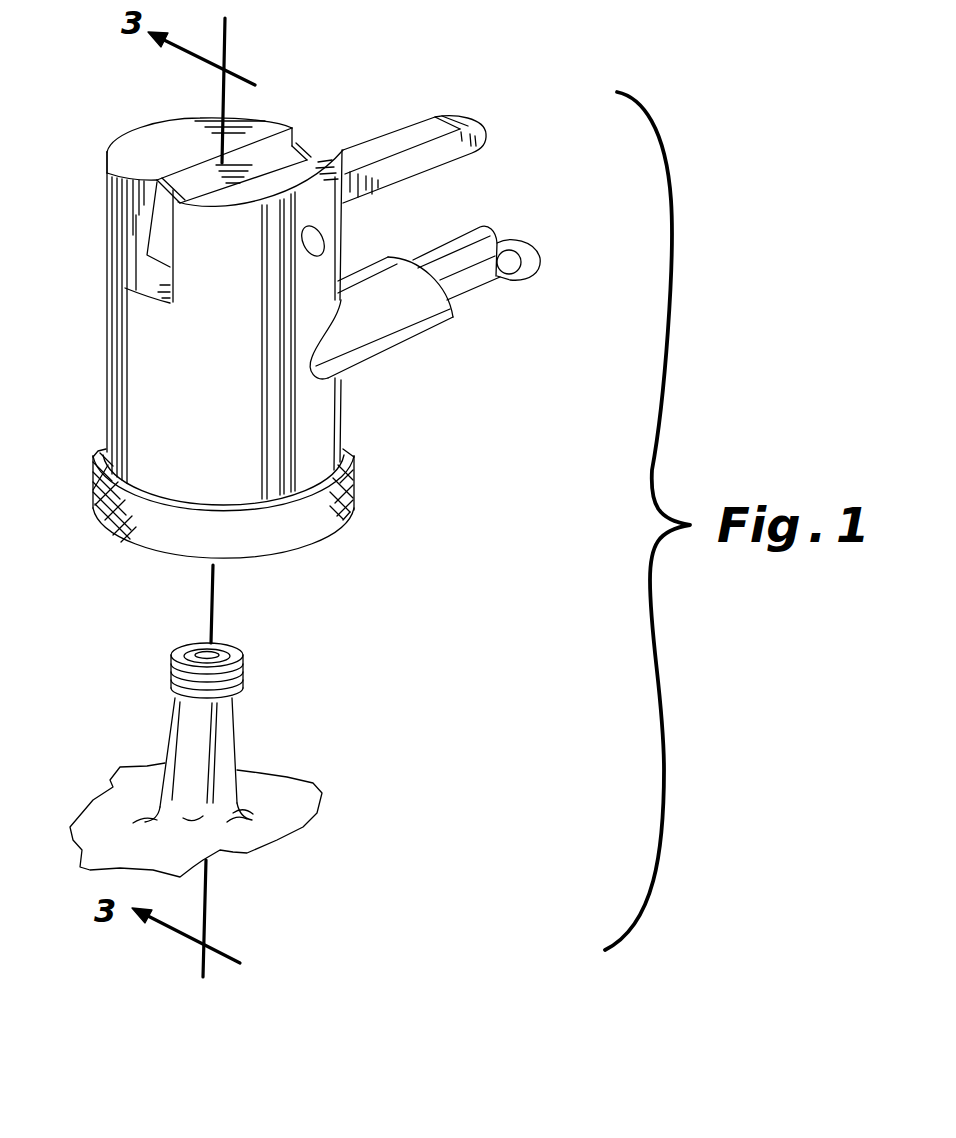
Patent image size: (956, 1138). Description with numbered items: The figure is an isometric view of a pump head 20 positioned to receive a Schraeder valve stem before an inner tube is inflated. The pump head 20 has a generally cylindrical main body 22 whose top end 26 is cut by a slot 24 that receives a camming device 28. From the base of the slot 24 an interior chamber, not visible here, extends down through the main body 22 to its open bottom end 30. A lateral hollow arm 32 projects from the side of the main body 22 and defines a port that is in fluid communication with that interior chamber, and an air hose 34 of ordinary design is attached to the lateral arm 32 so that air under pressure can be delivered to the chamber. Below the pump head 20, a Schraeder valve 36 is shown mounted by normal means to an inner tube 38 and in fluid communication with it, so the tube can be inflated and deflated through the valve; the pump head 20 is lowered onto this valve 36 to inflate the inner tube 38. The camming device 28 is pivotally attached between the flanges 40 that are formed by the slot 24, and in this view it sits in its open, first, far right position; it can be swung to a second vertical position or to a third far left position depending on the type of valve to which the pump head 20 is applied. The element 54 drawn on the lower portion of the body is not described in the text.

The pump head 20 is at (360, 80).
The main body 22 is at (168, 422).
The slot 24 is at (128, 223).
The top end 26 is at (157, 155).
The camming device 28 is at (468, 112).
The open bottom end 30 is at (92, 505).
The lateral hollow arm 32 is at (377, 330).
The air hose 34 is at (483, 233).
The Schraeder valve 36 is at (223, 740).
The inner tube 38 is at (278, 811).
The flanges 40 is at (130, 262).
The collar 54 is at (275, 535).